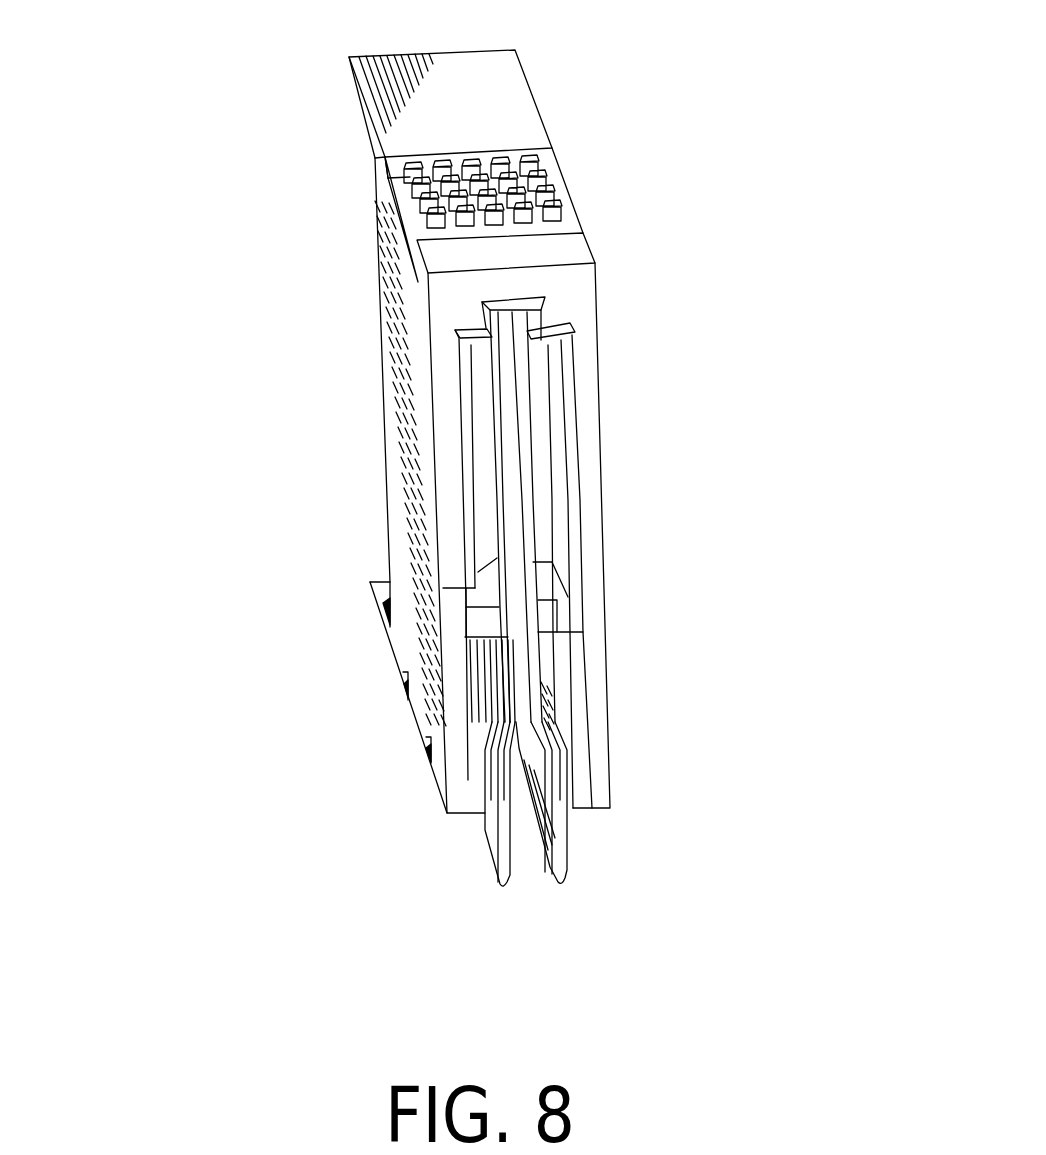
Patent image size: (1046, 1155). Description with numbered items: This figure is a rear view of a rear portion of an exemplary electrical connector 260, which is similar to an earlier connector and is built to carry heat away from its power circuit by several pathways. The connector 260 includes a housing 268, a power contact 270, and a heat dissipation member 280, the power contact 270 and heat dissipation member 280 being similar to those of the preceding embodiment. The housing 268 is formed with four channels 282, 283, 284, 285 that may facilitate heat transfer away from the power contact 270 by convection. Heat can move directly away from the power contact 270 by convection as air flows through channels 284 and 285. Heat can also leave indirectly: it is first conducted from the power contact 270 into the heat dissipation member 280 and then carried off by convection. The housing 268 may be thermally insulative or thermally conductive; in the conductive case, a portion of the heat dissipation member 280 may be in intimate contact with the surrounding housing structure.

The electrical connector 260 is at (192, 150).
The housing 268 is at (490, 83).
The heat dissipation member 280 is at (594, 202).
The power contact 270 is at (545, 522).
The channel 282 is at (478, 574).
The channel 283 is at (548, 585).
The channel 284 is at (476, 720).
The channel 285 is at (560, 714).